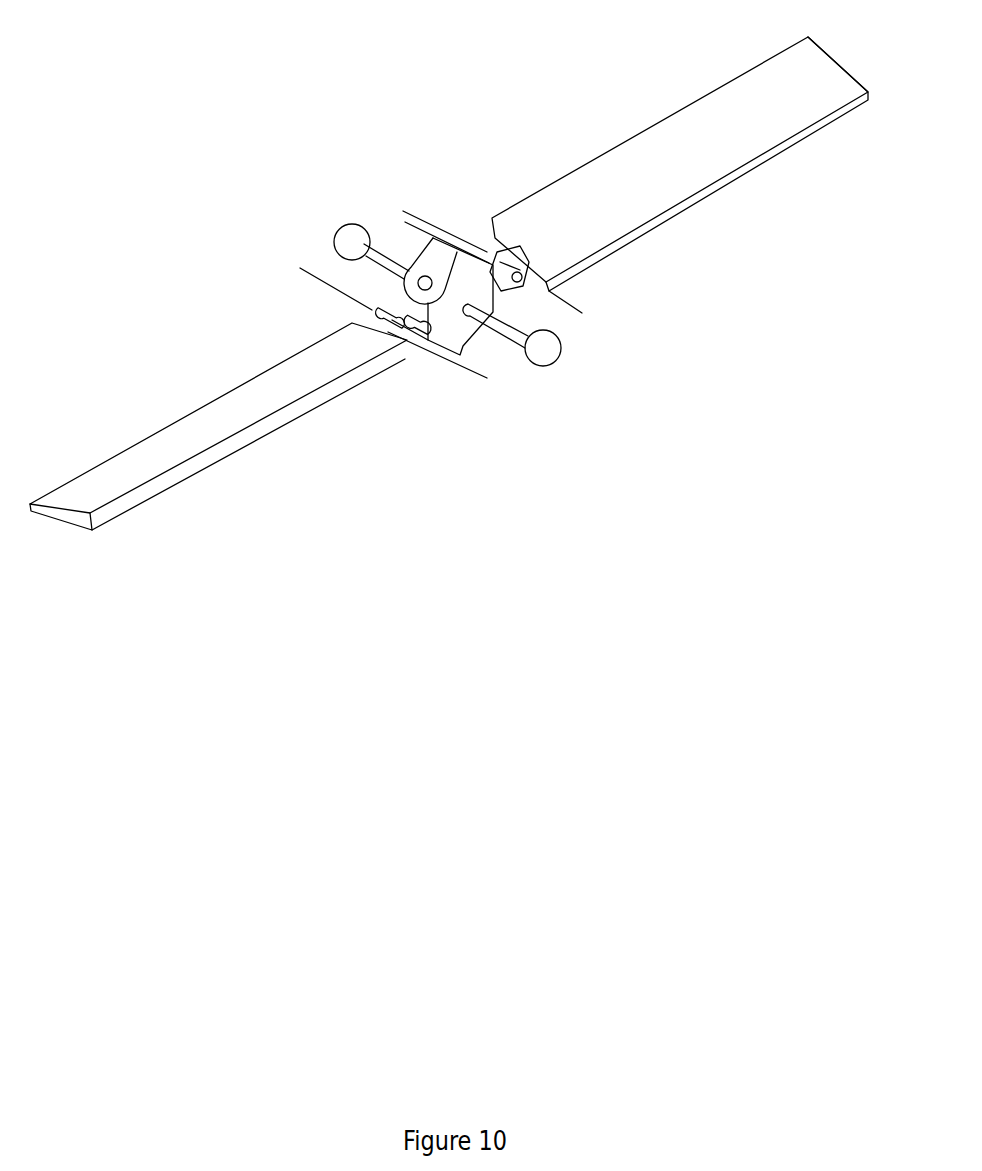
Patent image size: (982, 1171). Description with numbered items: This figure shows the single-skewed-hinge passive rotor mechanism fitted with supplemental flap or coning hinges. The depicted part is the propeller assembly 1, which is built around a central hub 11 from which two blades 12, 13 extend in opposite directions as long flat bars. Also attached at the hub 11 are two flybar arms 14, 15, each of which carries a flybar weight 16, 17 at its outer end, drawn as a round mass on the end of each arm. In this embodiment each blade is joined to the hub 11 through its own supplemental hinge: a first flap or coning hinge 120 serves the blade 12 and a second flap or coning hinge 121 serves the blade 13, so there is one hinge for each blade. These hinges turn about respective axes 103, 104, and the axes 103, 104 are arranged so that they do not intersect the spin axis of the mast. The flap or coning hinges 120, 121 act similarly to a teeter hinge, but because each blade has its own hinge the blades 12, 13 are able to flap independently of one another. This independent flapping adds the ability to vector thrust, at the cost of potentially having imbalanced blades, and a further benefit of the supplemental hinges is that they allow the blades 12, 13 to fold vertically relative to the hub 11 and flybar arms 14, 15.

The propeller assembly 1 is at (364, 345).
The hub 11 is at (482, 353).
The blade 12 is at (156, 420).
The blade 13 is at (700, 212).
The flybar arm 14 is at (531, 330).
The flybar arm 15 is at (367, 261).
The flybar weight 16 is at (575, 362).
The flybar weight 17 is at (326, 232).
The axis 103 is at (494, 381).
The axis 104 is at (593, 311).
The flap or coning hinge 120 is at (357, 318).
The flap or coning hinge 121 is at (471, 242).